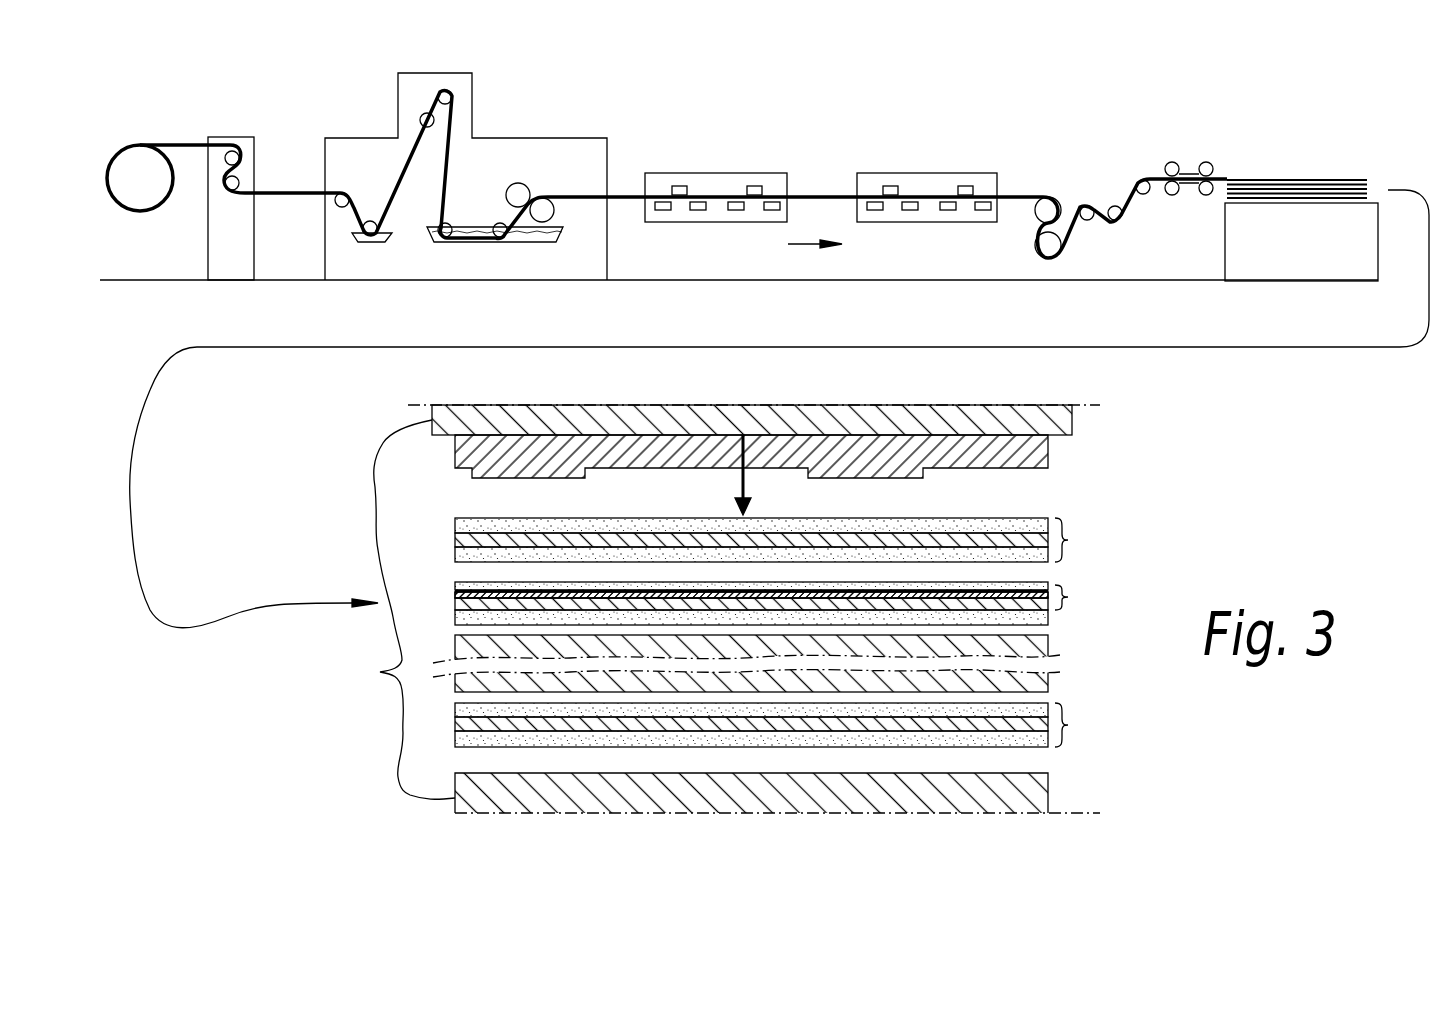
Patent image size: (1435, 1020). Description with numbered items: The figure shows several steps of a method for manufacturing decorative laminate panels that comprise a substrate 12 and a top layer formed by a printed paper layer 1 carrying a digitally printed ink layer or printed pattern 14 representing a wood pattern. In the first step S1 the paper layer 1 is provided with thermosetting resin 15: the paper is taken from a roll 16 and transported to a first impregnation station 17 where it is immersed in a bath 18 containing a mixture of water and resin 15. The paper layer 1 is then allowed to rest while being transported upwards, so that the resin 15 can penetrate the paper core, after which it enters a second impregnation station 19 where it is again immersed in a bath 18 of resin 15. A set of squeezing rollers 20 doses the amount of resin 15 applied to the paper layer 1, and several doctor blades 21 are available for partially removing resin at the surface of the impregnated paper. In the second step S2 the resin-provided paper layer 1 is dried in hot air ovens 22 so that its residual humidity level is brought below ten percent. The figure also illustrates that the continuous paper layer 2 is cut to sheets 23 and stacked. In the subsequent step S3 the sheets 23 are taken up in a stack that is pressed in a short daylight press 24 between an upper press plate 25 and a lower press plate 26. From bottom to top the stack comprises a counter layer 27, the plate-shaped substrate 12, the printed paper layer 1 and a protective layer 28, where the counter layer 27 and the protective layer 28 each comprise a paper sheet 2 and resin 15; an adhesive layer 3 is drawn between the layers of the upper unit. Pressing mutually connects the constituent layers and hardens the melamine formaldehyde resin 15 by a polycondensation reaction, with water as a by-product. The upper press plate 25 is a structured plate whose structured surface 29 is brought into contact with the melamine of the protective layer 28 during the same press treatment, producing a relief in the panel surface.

The paper layer 1 is at (170, 147).
The paper sheet 2 is at (465, 542).
The adhesive layer 3 is at (478, 591).
The substrate 12 is at (1020, 683).
The printed pattern 14 is at (547, 594).
The thermosetting resin 15 is at (520, 238).
The roll 16 is at (132, 165).
The first impregnation station 17 is at (375, 195).
The bath 18 is at (450, 240).
The second impregnation station 19 is at (478, 203).
The squeezing rollers 20 is at (556, 176).
The doctor blades 21 is at (400, 185).
The hot air ovens 22 is at (692, 173).
The sheets 23 is at (1347, 186).
The short daylight press 24 is at (399, 609).
The upper press plate 25 is at (1005, 452).
The lower press plate 26 is at (1010, 805).
The counter layer 27 is at (1068, 725).
The protective layer 28 is at (1068, 540).
The structured surface 29 is at (676, 493).
The step of providing paper layer with thermosetting resin S1 is at (550, 280).
The drying step S2 is at (682, 262).
The pressing step S3 is at (1153, 792).